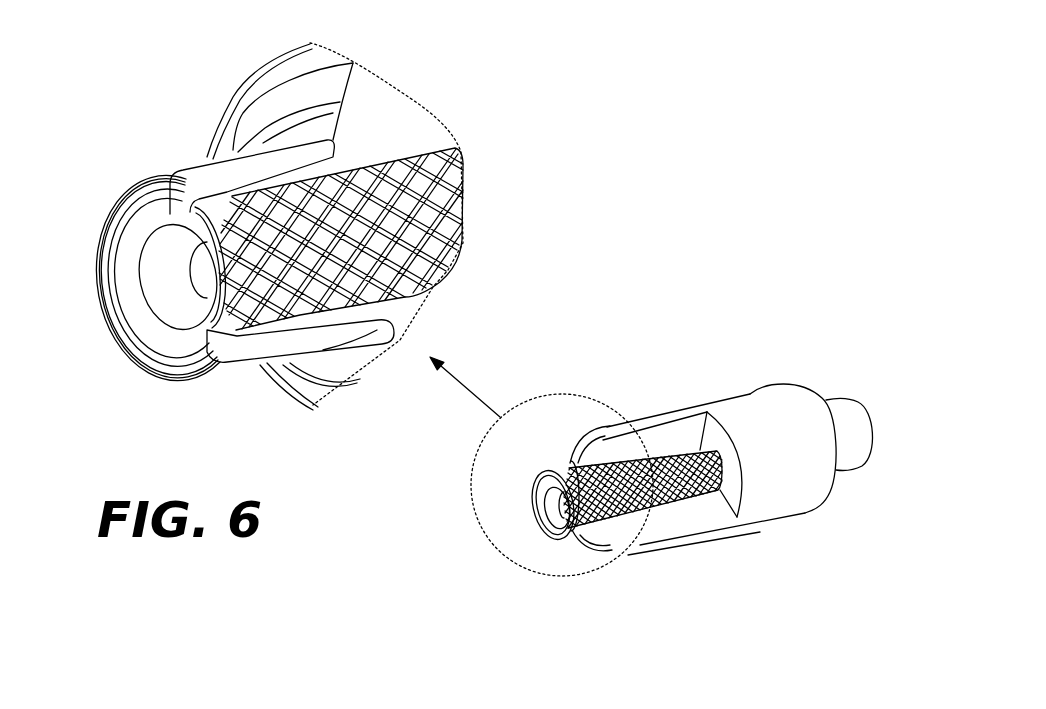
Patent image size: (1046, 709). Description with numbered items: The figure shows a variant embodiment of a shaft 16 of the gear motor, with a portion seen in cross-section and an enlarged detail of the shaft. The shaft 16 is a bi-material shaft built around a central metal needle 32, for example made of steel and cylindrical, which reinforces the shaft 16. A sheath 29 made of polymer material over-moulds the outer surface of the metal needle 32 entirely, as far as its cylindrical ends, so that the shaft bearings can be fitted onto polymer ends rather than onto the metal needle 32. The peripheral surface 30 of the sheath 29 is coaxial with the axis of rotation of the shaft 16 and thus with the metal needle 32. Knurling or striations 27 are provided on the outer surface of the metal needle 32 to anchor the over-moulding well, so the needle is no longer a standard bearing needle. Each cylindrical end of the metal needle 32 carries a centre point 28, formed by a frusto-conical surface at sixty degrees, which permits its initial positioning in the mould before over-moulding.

The shaft 16 is at (417, 537).
The knurling or striations 27 is at (430, 217).
The centre points 28 is at (122, 244).
The sheath 29 is at (177, 161).
The peripheral surface 30 is at (747, 412).
The metal needle 32 is at (433, 167).